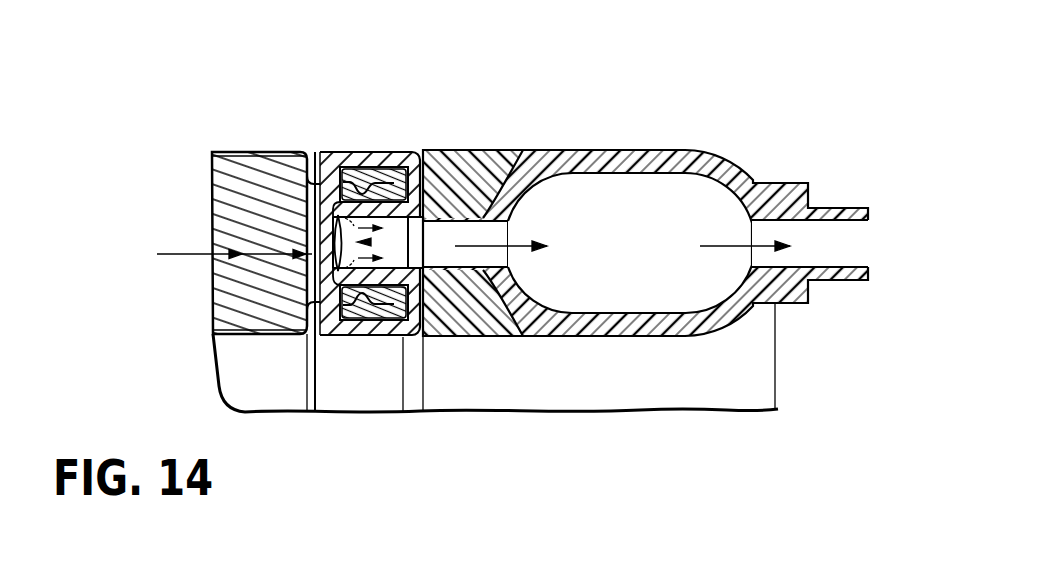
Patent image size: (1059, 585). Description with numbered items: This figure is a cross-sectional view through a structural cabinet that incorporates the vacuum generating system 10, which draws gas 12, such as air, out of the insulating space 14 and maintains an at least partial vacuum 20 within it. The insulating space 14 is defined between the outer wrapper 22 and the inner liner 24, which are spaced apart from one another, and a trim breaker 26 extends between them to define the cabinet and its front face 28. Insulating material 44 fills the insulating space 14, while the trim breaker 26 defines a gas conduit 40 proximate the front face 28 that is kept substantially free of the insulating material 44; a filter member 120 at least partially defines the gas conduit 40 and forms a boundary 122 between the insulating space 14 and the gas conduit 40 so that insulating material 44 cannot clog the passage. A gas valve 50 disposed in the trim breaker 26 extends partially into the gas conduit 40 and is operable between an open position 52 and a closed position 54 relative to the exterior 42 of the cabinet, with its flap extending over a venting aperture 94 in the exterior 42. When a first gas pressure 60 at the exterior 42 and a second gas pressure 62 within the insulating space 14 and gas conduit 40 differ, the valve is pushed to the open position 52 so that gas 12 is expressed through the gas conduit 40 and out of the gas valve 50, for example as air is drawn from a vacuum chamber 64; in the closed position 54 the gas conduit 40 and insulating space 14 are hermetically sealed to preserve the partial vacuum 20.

The vacuum generating system 10 is at (432, 110).
The gas 12 is at (715, 247).
The insulating space 14 is at (217, 252).
The at least partial vacuum 20 is at (240, 221).
The outer wrapper 22 is at (273, 151).
The inner liner 24 is at (233, 337).
The trim breaker 26 is at (382, 150).
The front face 28 is at (442, 182).
The gas conduit 40 is at (312, 246).
The exterior 42 is at (428, 270).
The insulating material 44 is at (336, 232).
The gas valve 50 is at (357, 242).
The open position 52 is at (383, 310).
The closed position 54 is at (350, 318).
The first gas pressure 60 is at (238, 192).
The second gas pressure 62 is at (604, 282).
The vacuum chamber 64 is at (676, 206).
The venting aperture 94 is at (329, 165).
The filter member 120 is at (313, 190).
The boundary 122 is at (310, 277).